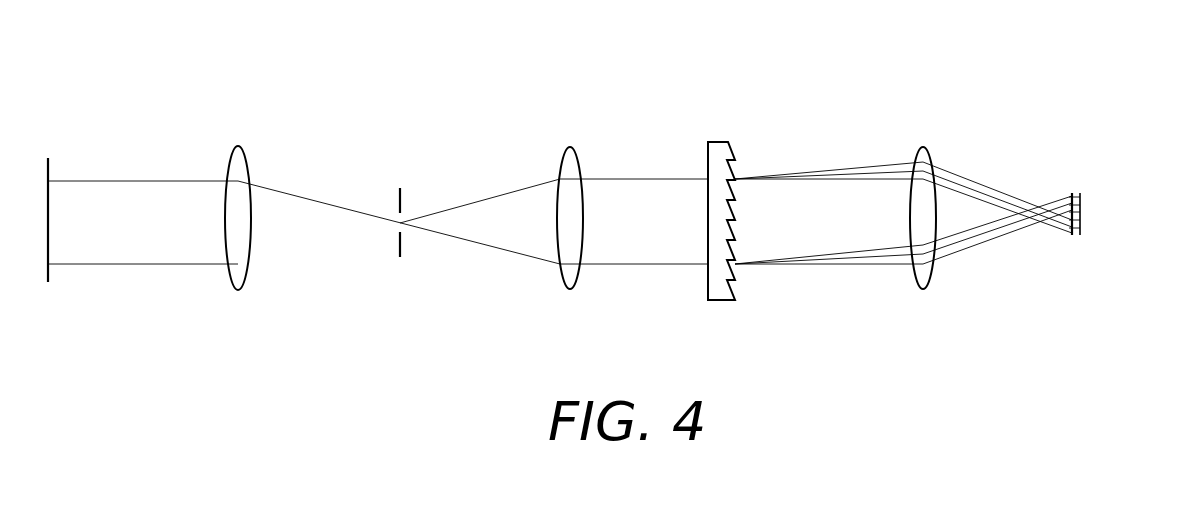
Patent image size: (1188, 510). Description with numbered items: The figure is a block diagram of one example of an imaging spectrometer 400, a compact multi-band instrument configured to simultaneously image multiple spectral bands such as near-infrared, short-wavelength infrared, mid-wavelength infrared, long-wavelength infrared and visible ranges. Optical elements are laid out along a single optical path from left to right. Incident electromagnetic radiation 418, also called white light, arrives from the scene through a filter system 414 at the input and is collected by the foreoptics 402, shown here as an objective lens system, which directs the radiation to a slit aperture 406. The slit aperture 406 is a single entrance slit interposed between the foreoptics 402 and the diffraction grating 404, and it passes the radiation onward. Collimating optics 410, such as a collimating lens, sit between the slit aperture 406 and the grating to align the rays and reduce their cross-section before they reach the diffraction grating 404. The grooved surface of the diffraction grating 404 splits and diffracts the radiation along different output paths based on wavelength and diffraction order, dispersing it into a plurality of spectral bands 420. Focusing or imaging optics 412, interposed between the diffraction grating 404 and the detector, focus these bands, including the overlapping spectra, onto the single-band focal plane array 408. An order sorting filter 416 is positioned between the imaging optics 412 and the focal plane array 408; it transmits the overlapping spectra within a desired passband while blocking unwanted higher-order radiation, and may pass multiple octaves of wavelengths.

The imaging spectrometer 400 is at (541, 77).
The foreoptics 402 is at (238, 148).
The diffraction grating 404 is at (728, 142).
The slit aperture 406 is at (402, 190).
The single-band focal plane array 408 is at (1081, 205).
The collimating optics 410 is at (570, 148).
The imaging optics 412 is at (921, 148).
The filter system 414 is at (50, 166).
The order sorting filter 416 is at (1073, 234).
The electromagnetic radiation 418 is at (128, 178).
The spectral bands 420 is at (790, 165).